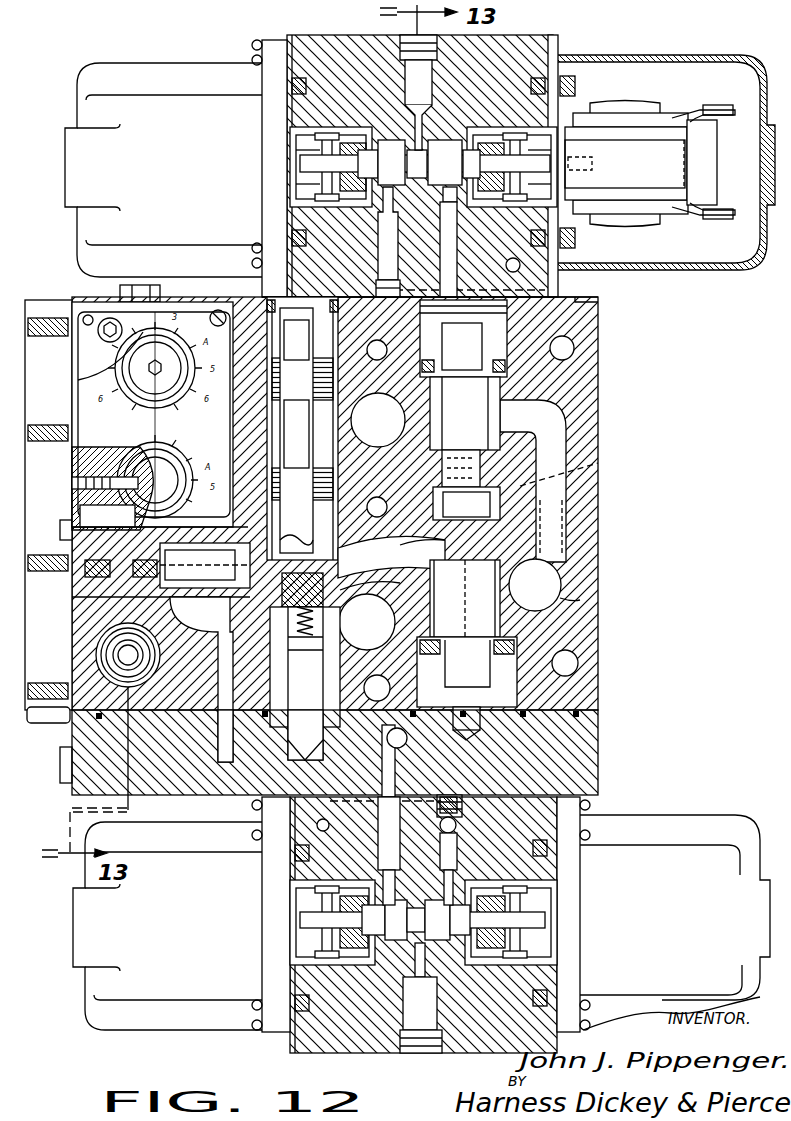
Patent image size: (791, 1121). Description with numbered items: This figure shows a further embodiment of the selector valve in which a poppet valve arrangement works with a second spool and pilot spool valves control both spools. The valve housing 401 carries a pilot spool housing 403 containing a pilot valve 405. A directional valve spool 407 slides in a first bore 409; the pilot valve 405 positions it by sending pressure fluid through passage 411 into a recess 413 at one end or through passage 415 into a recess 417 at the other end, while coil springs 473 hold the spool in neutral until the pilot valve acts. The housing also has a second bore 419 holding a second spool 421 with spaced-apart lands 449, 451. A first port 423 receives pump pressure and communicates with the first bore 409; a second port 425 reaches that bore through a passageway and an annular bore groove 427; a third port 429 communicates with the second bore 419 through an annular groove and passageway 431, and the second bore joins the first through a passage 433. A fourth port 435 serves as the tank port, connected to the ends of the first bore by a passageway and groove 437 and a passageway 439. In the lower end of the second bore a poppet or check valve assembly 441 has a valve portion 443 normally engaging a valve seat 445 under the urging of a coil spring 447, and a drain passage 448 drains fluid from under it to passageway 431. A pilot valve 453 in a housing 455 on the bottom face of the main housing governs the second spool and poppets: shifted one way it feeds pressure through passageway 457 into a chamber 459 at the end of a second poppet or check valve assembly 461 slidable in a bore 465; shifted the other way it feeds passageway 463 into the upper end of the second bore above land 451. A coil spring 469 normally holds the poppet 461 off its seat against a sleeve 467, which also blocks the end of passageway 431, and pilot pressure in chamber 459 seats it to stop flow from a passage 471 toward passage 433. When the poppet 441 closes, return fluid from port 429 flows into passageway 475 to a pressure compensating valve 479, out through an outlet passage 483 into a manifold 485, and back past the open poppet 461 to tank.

The valve housing 401 is at (583, 368).
The pilot spool housing 403 is at (542, 35).
The pilot valve 405 is at (447, 150).
The directional valve spool 407 is at (455, 426).
The first bore 409 is at (566, 397).
The passage 411 is at (470, 252).
The recess 413 is at (600, 303).
The passage 415 is at (380, 254).
The recess 417 is at (535, 660).
The second bore 419 is at (338, 425).
The second spool 421 is at (409, 313).
The first port 423 is at (600, 463).
The second port 425 is at (397, 406).
The annular bore groove 427 is at (373, 496).
The third port 429 is at (436, 626).
The annular groove and passageway 431 is at (367, 622).
The passage 433 is at (403, 558).
The fourth port 435 is at (560, 602).
The passageway and groove 437 is at (535, 585).
The passageway 439 is at (562, 506).
The poppet or check valve assembly 441 is at (387, 557).
The valve portion 443 is at (380, 594).
The valve seat 445 is at (258, 627).
The coil spring 447 is at (324, 762).
The drain passage 448 is at (208, 742).
The land 449 is at (308, 497).
The land 451 is at (363, 242).
The pilot valve 453 is at (455, 895).
The housing 455 is at (418, 911).
The passageway 457 is at (456, 828).
The chamber 459 is at (72, 586).
The second poppet or check valve assembly 461 is at (70, 530).
The passageway 463 is at (402, 793).
The bore 465 is at (130, 508).
The sleeve 467 is at (234, 562).
The coil spring 469 is at (234, 580).
The passage 471 is at (186, 502).
The coil springs 473 is at (614, 689).
The passageway 475 is at (163, 667).
The pressure compensating valve 479 is at (146, 686).
The outlet passage 483 is at (72, 705).
The manifold 485 is at (72, 470).